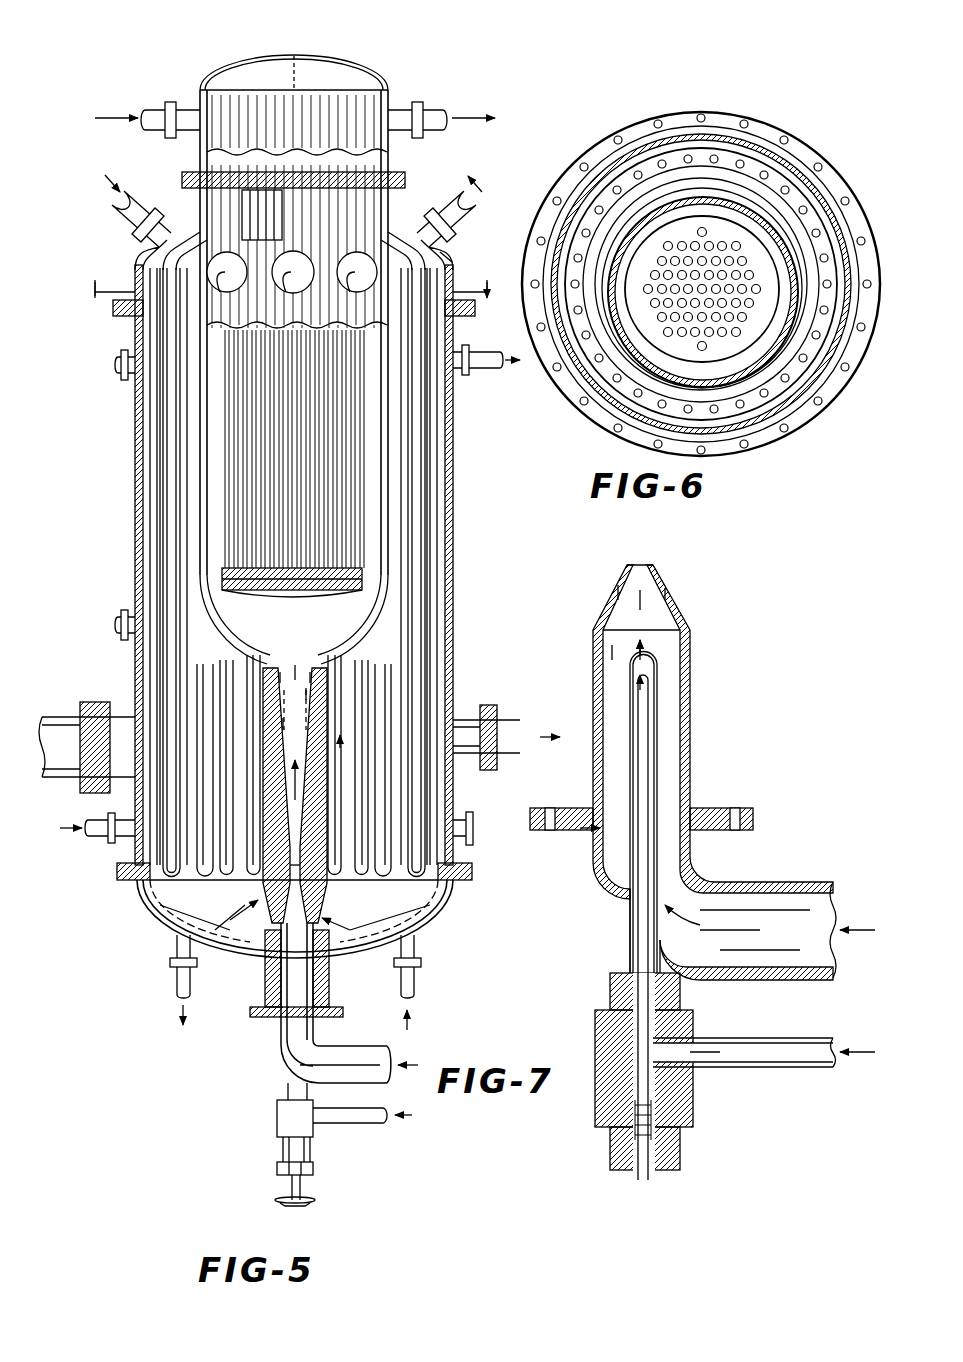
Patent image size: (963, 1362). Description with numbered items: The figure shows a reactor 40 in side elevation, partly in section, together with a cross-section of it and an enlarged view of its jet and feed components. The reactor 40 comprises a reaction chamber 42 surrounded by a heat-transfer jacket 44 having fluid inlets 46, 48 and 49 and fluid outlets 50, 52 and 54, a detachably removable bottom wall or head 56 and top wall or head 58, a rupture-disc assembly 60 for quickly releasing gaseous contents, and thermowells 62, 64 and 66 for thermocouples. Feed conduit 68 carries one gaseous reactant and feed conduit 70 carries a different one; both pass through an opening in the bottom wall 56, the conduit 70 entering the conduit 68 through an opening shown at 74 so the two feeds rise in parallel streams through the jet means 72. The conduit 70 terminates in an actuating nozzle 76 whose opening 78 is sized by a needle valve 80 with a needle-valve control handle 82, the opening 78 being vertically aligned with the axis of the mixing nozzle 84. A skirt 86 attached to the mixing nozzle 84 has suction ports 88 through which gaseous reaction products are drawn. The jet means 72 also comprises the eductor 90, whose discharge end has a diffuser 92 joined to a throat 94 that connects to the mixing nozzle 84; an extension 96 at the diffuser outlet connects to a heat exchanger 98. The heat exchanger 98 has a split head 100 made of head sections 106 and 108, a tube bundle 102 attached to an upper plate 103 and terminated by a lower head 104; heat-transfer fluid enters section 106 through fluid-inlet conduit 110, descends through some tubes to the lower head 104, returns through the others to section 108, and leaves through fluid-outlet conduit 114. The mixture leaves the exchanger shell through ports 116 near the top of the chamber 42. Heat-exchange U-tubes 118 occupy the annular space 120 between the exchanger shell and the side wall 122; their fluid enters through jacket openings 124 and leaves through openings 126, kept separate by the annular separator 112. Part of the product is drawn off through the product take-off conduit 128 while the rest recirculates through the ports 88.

In FIG. 5, the reactor 40 is at (299, 605).
In FIG. 5, the reaction chamber 42 is at (375, 907).
In FIG. 5, the heat-transfer jacket 44 is at (446, 556).
In FIG. 6, the heat-transfer jacket 44 is at (676, 136).
In FIG. 5, the fluid inlet 46 is at (112, 220).
In FIG. 5, the fluid inlet 48 is at (100, 840).
In FIG. 5, the fluid inlet 49 is at (416, 990).
In FIG. 5, the fluid outlet 50 is at (420, 190).
In FIG. 5, the fluid outlet 52 is at (470, 372).
In FIG. 5, the fluid outlet 54 is at (178, 990).
In FIG. 5, the bottom wall or head 56 is at (452, 918).
In FIG. 5, the top wall or head 58 is at (432, 252).
In FIG. 5, the rupture-disc assembly 60 is at (95, 703).
In FIG. 5, the thermowell 62 is at (122, 372).
In FIG. 5, the thermowell 64 is at (124, 612).
In FIG. 5, the thermowell 66 is at (470, 817).
In FIG. 5, the feed conduit 68 is at (355, 1058).
In FIG. 7, the feed conduit 68 is at (790, 893).
In FIG. 5, the feed conduit 70 is at (365, 1128).
In FIG. 7, the feed conduit 70 is at (658, 700).
In FIG. 5, the jet means 72 is at (278, 988).
In FIG. 7, the jet means 72 is at (702, 638).
In FIG. 5, the opening in conduit wall 74 is at (285, 1068).
In FIG. 7, the opening in conduit wall 74 is at (626, 945).
In FIG. 7, the actuating nozzle 76 is at (660, 670).
In FIG. 7, the opening 78 is at (643, 660).
In FIG. 5, the needle valve 80 is at (302, 1190).
In FIG. 7, the needle valve 80 is at (645, 770).
In FIG. 5, the needle-valve control handle 82 is at (285, 1200).
In FIG. 5, the mixing nozzle 84 is at (209, 918).
In FIG. 5, the skirt 86 is at (376, 919).
In FIG. 5, the suction ports 88 is at (265, 965).
In FIG. 5, the eductor 90 is at (325, 792).
In FIG. 5, the diffuser 92 is at (307, 745).
In FIG. 5, the throat 94 is at (305, 865).
In FIG. 5, the extension 96 is at (307, 695).
In FIG. 5, the heat exchanger 98 is at (322, 215).
In FIG. 6, the heat exchanger 98 is at (796, 210).
In FIG. 5, the split or divided head 100 is at (331, 50).
In FIG. 5, the tube bundle 102 is at (222, 432).
In FIG. 6, the tube bundle 102 is at (726, 226).
In FIG. 5, the upper plate 103 is at (268, 188).
In FIG. 5, the lower head 104 is at (290, 585).
In FIG. 5, the head section 106 is at (258, 75).
In FIG. 5, the head section 108 is at (352, 80).
In FIG. 5, the fluid-inlet conduit 110 is at (165, 108).
In FIG. 5, the annular separator 112 is at (160, 238).
In FIG. 6, the annular separator 112 is at (636, 150).
In FIG. 5, the fluid-outlet conduit 114 is at (432, 108).
In FIG. 5, the ports or openings 116 is at (350, 258).
In FIG. 5, the heat-exchange U-tubes 118 is at (208, 890).
In FIG. 6, the heat-exchange U-tubes 118 is at (600, 162).
In FIG. 5, the annular space 120 is at (158, 512).
In FIG. 6, the annular space 120 is at (594, 392).
In FIG. 5, the side wall 122 is at (150, 540).
In FIG. 5, the jacket openings 124 is at (138, 256).
In FIG. 6, the jacket openings 124 is at (662, 405).
In FIG. 5, the jacket openings 126 is at (192, 245).
In FIG. 6, the jacket openings 126 is at (614, 412).
In FIG. 5, the product take-off conduit 128 is at (500, 712).